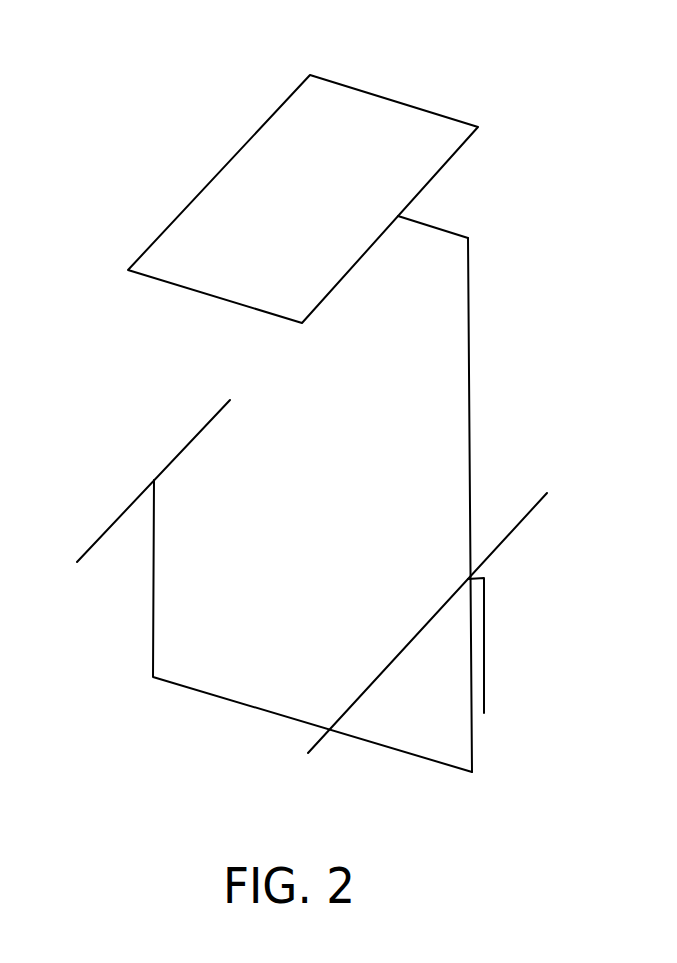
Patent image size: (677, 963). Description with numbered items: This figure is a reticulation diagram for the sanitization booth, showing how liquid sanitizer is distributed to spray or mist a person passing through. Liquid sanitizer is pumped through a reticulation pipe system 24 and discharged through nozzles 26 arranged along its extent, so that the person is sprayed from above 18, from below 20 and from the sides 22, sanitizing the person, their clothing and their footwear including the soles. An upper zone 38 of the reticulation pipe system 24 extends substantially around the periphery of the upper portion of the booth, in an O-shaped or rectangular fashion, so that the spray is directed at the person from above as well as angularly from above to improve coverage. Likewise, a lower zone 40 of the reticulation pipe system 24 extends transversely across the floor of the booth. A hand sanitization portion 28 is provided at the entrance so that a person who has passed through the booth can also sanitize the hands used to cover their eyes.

The above 18 is at (348, 72).
The below 20 is at (257, 742).
The sides 22 is at (155, 480).
The reticulation pipe system 24 is at (507, 308).
The nozzles 26 is at (185, 209).
The hand sanitization portion 28 is at (318, 740).
The upper zone 38 is at (427, 207).
The lower zone 40 is at (480, 752).